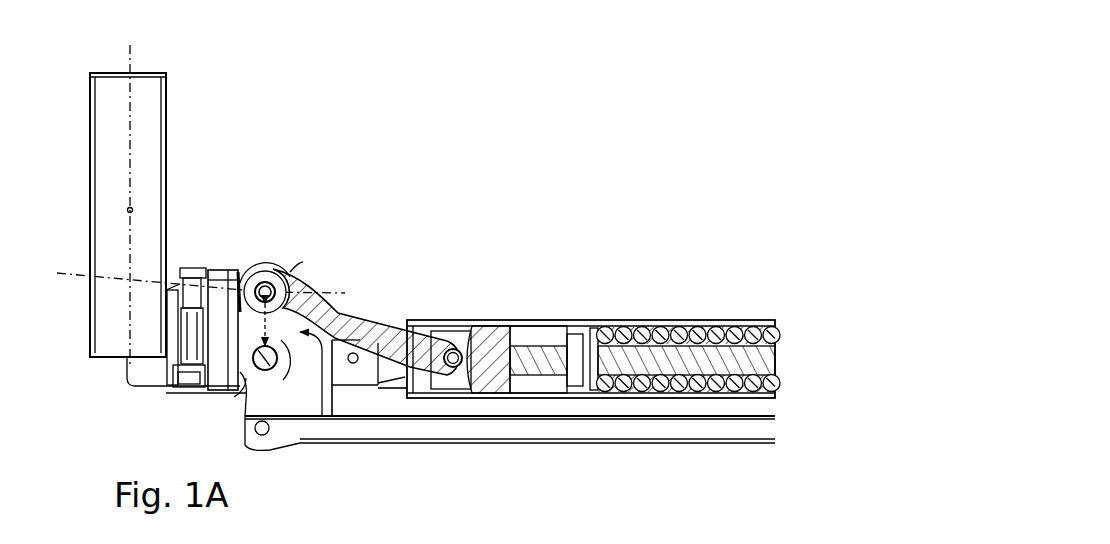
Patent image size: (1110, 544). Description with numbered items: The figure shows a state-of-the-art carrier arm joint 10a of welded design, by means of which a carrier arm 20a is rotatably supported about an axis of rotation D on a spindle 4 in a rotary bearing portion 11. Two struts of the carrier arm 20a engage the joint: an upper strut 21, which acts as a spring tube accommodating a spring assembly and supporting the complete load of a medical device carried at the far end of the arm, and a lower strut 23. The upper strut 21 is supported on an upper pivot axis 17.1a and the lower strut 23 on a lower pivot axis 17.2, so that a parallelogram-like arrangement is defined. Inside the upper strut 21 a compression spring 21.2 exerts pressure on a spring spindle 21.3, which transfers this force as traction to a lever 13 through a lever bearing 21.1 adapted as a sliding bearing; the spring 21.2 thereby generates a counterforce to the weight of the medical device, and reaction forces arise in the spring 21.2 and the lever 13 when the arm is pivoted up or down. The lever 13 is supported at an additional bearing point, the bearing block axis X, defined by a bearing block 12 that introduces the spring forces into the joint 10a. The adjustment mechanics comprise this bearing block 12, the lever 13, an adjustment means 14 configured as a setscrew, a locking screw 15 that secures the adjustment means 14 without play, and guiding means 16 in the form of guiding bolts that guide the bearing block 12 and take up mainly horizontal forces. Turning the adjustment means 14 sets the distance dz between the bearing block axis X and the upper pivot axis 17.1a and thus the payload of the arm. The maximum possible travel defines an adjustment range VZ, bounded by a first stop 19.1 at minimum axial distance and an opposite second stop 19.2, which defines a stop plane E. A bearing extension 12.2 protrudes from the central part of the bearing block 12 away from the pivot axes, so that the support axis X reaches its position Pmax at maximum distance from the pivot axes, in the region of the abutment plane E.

The spindle 4 is at (172, 92).
The carrier arm joint 10a is at (305, 214).
The rotary bearing portion 11 is at (156, 307).
The bearing block 12 is at (261, 281).
The bearing extension 12.2 is at (300, 270).
The lever 13 is at (353, 327).
The adjustment means 14 is at (156, 307).
The locking screw 15 is at (184, 393).
The guiding means 16 is at (243, 283).
The upper pivot axis 17.1a is at (247, 400).
The lower pivot axis 17.2 is at (265, 436).
The first stop 19.1 is at (234, 396).
The second stop 19.2 is at (176, 298).
The carrier arm 20a is at (593, 311).
The upper strut 21 is at (425, 319).
The lever bearing 21.1 is at (504, 319).
The spring 21.2 is at (690, 330).
The spring spindle 21.3 is at (557, 352).
The lower strut 23 is at (510, 419).
The axis of rotation D is at (133, 48).
The stop plane E is at (72, 270).
The bearing block axis X is at (290, 272).
The position at maximum distance Pmax is at (335, 188).
The distance dz is at (320, 290).
The adjustment range VZ is at (320, 396).